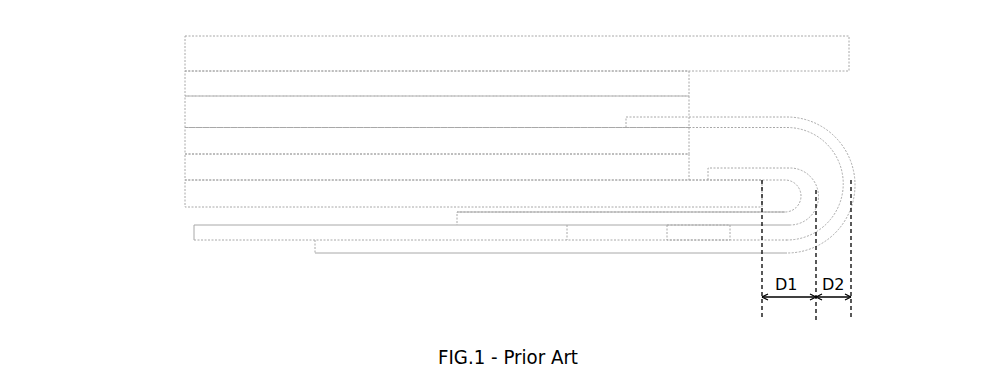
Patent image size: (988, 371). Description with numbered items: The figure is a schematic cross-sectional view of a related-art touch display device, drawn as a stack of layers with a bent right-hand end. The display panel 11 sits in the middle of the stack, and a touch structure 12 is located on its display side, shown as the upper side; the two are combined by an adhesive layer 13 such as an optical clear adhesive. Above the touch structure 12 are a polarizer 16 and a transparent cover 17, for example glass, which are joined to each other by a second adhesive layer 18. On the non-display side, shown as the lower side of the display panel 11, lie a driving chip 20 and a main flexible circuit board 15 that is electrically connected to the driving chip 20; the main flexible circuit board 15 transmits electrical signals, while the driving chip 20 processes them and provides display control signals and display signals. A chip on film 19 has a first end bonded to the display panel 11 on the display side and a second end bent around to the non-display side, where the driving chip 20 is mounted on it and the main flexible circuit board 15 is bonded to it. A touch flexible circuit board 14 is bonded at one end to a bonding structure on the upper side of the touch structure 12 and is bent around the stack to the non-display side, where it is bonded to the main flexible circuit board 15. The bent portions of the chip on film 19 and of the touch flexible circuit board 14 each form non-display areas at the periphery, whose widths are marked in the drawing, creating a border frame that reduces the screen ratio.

The display panel 11 is at (198, 192).
The touch structure 12 is at (197, 141).
The adhesive layer 13 is at (197, 163).
The touch flexible circuit board 14 is at (832, 140).
The main flexible circuit board 15 is at (205, 232).
The polarizer 16 is at (195, 112).
The transparent cover 17 is at (195, 55).
The second adhesive layer 18 is at (193, 83).
The chip on film 19 is at (592, 220).
The driving chip 20 is at (703, 232).